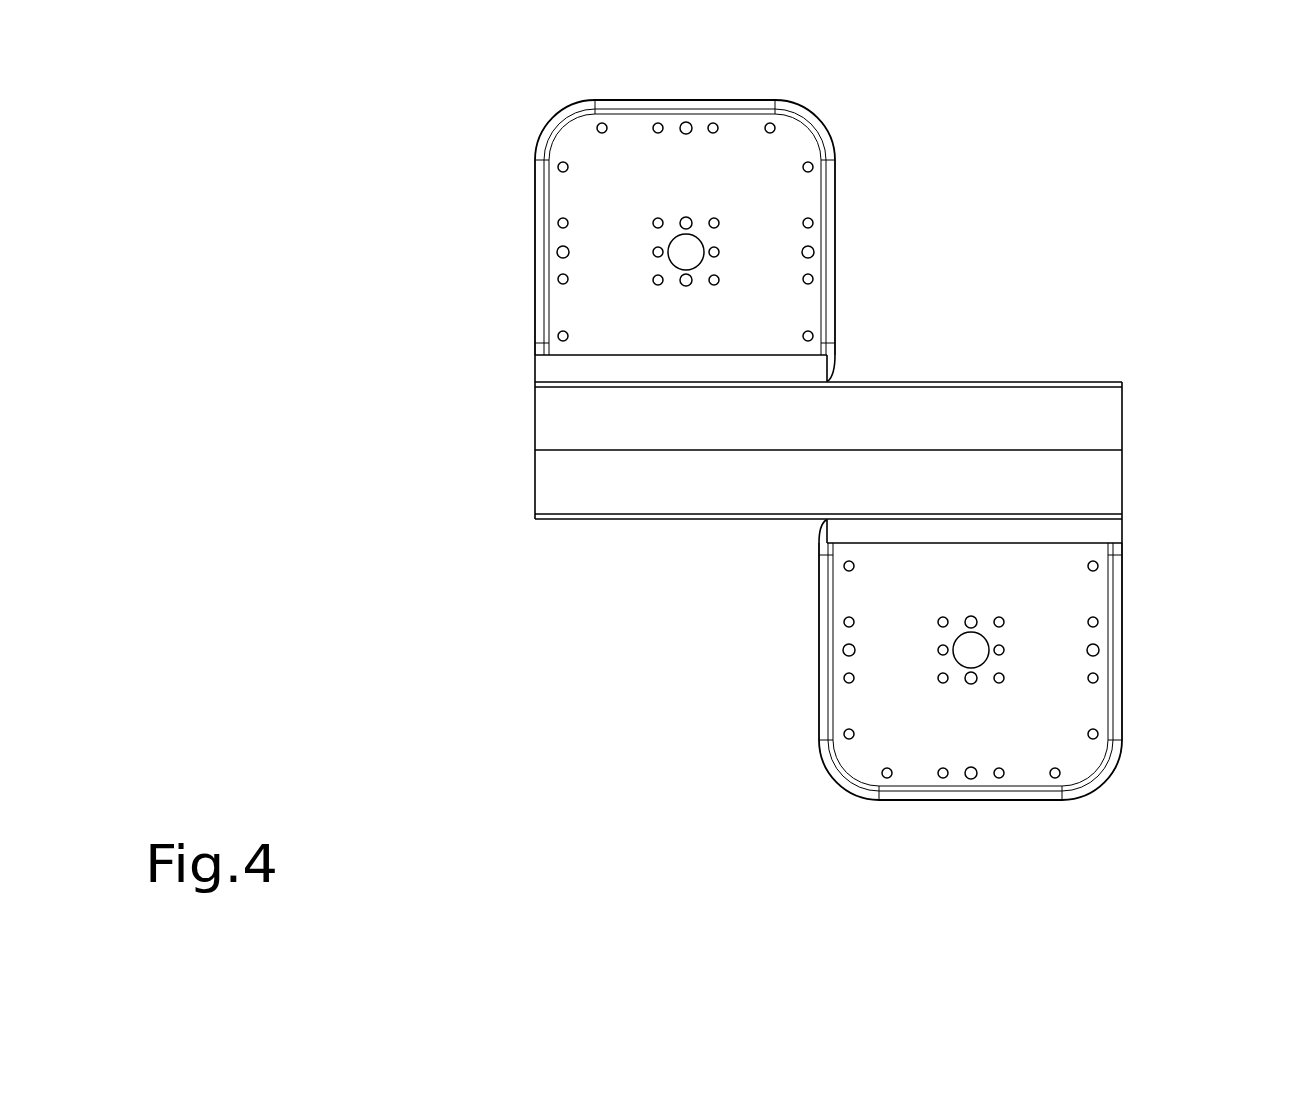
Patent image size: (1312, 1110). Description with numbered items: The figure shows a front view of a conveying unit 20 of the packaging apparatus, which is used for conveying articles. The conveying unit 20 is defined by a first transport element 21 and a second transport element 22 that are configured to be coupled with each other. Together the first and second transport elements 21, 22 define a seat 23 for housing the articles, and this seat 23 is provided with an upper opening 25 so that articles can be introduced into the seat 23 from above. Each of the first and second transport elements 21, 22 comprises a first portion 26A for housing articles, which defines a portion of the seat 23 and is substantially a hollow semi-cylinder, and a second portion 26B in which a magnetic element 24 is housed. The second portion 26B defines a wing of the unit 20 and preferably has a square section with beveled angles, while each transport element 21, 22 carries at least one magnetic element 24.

The conveying unit 20 is at (1168, 355).
The first transport element 21 is at (785, 545).
The second transport element 22 is at (887, 292).
The seat 23 is at (1085, 464).
The magnetic element 24 is at (638, 200).
The upper opening 25 is at (570, 425).
The first portion 26A is at (1012, 413).
The second portion 26B is at (794, 154).